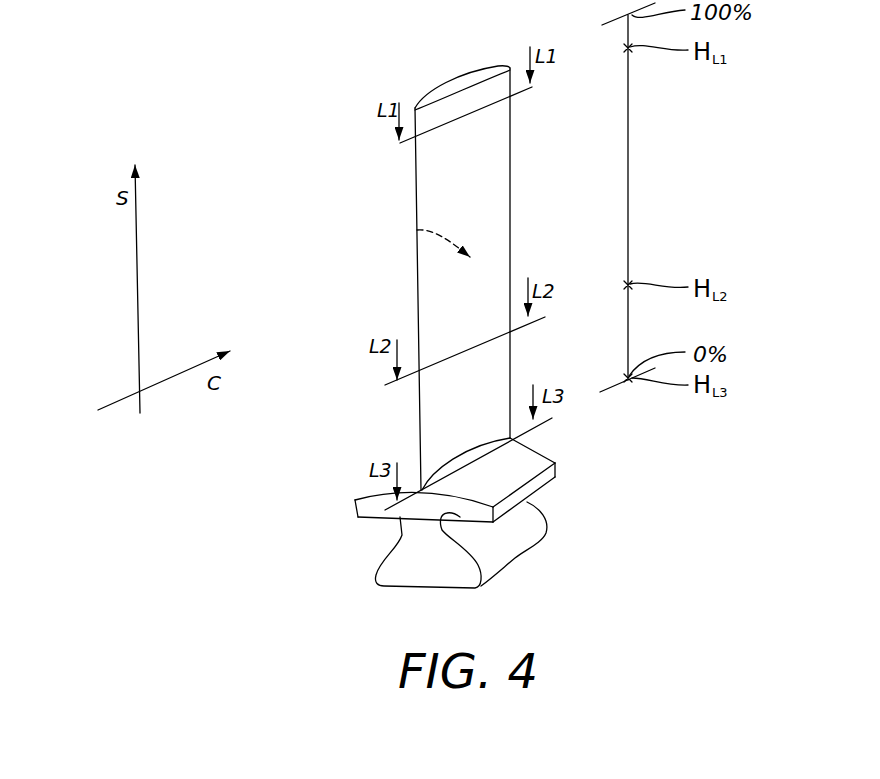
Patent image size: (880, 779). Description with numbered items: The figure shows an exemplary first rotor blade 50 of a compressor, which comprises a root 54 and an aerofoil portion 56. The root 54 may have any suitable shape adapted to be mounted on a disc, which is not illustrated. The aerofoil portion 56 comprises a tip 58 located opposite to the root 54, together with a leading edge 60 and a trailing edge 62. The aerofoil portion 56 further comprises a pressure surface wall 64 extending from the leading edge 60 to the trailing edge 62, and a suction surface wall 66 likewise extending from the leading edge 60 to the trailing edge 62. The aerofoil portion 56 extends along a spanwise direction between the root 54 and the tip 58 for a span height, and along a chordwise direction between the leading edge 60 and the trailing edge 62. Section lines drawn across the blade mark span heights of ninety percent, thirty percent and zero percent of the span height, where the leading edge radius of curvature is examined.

The first rotor blade 50 is at (392, 192).
The root 54 is at (427, 575).
The aerofoil portion 56 is at (407, 253).
The tip 58 is at (453, 77).
The leading edge 60 is at (417, 287).
The trailing edge 62 is at (510, 227).
The pressure surface wall 64 is at (476, 90).
The suction surface wall 66 is at (417, 230).